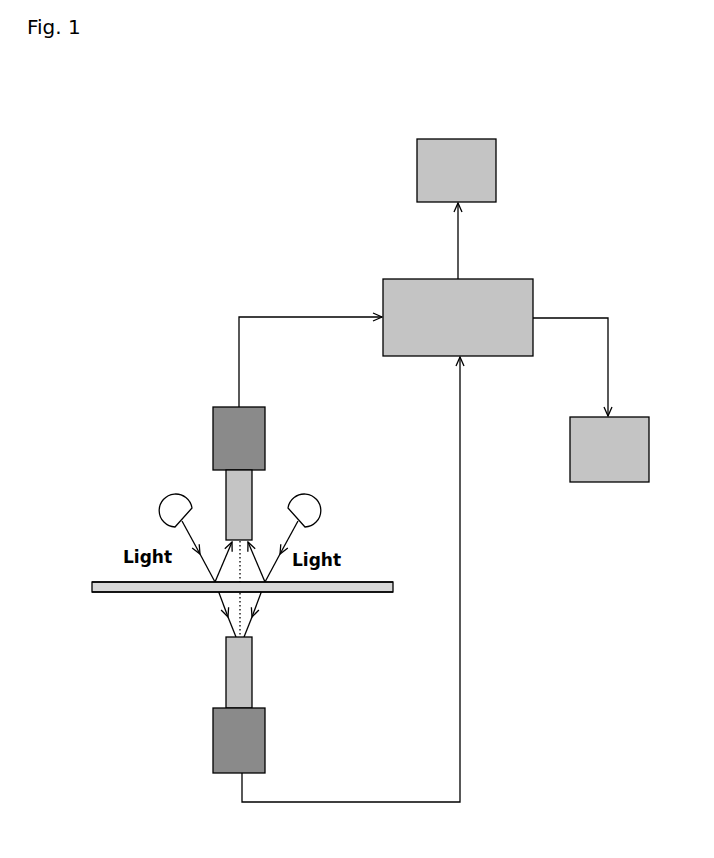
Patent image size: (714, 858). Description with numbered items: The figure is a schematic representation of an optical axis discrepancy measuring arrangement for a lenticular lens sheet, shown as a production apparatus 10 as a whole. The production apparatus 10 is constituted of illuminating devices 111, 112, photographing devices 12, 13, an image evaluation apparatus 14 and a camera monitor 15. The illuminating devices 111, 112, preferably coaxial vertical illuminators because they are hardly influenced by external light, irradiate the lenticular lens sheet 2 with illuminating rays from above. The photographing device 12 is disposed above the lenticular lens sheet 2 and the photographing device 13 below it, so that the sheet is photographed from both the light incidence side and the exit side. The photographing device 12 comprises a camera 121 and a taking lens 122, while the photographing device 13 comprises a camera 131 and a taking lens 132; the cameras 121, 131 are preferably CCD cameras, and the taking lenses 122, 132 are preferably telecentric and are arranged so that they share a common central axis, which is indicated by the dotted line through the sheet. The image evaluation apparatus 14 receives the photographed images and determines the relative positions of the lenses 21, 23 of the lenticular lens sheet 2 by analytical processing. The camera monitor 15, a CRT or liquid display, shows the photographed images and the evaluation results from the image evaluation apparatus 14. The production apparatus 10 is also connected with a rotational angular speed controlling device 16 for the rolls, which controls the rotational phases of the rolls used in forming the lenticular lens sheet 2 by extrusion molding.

The production apparatus 10 is at (597, 294).
The lenticular lens sheet 2 is at (92, 587).
The lens 21 is at (112, 593).
The lens 23 is at (108, 582).
The photographing device 12 is at (196, 462).
The camera 121 is at (258, 407).
The taking lens 122 is at (252, 503).
The photographing device 13 is at (188, 698).
The camera 131 is at (265, 738).
The taking lens 132 is at (252, 660).
The illuminating device 111 is at (160, 503).
The illuminating device 112 is at (320, 517).
The image evaluation apparatus 14 is at (517, 278).
The camera monitor 15 is at (625, 483).
The rotational angular speed controlling device 16 is at (496, 175).